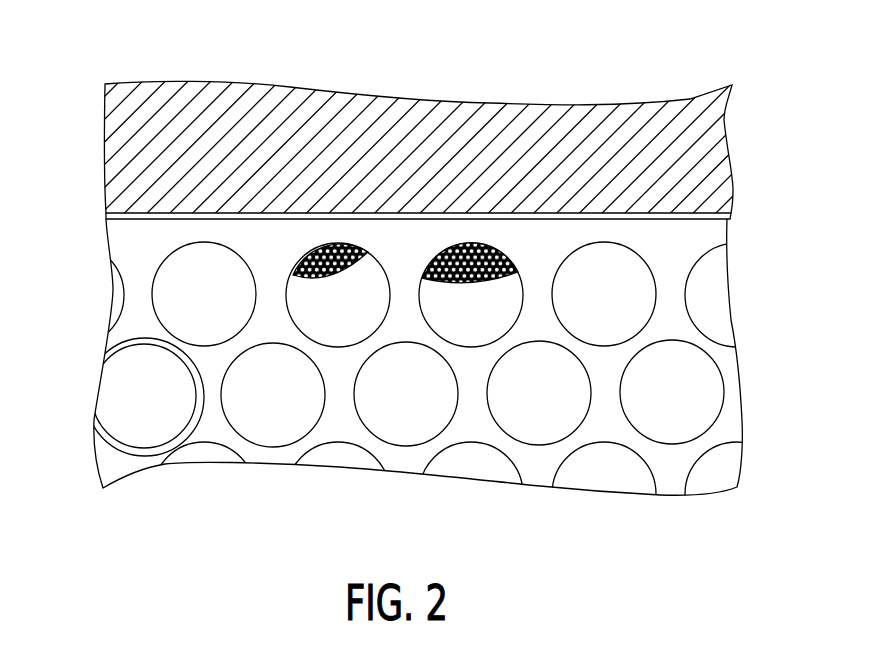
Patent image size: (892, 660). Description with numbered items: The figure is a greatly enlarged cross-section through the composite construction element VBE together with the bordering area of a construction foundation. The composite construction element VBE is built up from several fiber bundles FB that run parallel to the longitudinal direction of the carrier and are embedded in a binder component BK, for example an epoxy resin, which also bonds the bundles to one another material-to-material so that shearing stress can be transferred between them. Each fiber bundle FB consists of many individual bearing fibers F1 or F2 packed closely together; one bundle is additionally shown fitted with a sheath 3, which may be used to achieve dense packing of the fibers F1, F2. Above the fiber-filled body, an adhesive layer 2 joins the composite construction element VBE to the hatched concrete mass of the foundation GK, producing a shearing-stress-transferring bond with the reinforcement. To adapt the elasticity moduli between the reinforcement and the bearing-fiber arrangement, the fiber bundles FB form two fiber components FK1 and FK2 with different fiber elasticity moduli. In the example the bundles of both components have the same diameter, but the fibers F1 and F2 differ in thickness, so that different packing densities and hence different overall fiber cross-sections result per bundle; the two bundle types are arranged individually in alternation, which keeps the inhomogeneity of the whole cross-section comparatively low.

The adhesive layer 2 is at (614, 212).
The sheath 3 is at (140, 336).
The concrete mass of the foundation GK is at (357, 108).
The binder component BK is at (133, 263).
The first fiber component FK1 is at (370, 338).
The second fiber component FK2 is at (255, 263).
The fiber bundle FB is at (655, 260).
The bearing fibers of the first type F1 is at (362, 256).
The bearing fibers of the second type F2 is at (511, 258).
The composite construction element VBE is at (213, 514).